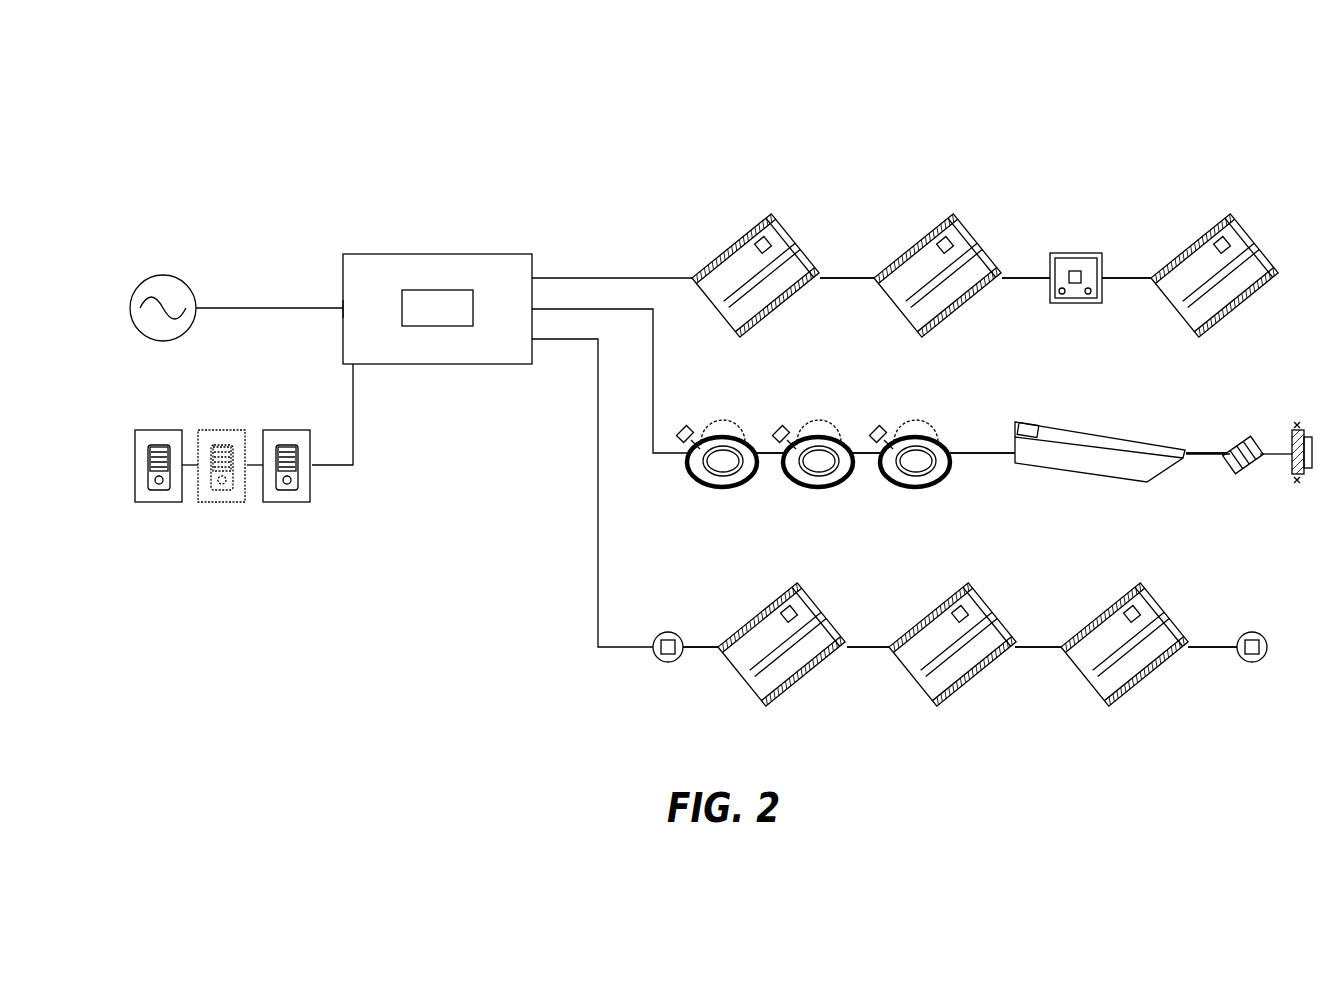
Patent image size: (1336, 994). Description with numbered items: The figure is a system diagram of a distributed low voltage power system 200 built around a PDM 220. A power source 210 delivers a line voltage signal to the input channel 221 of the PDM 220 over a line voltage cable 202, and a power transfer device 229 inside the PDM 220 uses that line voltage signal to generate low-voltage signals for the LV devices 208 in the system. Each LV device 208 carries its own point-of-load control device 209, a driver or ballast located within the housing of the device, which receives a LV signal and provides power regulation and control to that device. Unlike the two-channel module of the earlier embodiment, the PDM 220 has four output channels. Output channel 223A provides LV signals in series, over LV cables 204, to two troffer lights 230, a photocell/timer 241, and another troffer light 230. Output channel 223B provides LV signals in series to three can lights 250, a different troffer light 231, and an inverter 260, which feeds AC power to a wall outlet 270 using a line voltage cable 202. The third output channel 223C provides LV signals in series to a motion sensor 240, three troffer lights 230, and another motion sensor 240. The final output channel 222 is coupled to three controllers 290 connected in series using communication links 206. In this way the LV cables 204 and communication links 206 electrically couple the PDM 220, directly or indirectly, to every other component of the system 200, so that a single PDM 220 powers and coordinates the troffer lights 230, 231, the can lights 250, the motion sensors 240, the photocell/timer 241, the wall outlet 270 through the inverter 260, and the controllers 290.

The distributed low voltage power system 200 is at (190, 152).
The line voltage cable 202 is at (254, 305).
The low-voltage cable 204 is at (253, 462).
The communication link 206 is at (960, 462).
The LV device 208 is at (1332, 118).
The POL control device 209 is at (762, 237).
The power source 210 is at (163, 274).
The PDM 220 is at (370, 250).
The input channel 221 is at (338, 303).
The output channel 222 is at (353, 363).
The output channel 223A is at (550, 272).
The output channel 223B is at (537, 305).
The output channel 223C is at (537, 343).
The power transfer device 229 is at (418, 300).
The troffer light 230 is at (792, 236).
The troffer light 231 is at (1057, 425).
The motion sensor 240 is at (662, 664).
The photocell/timer 241 is at (1078, 295).
The can light 250 is at (710, 432).
The inverter 260 is at (1250, 440).
The wall outlet 270 is at (1295, 482).
The controller 290 is at (162, 503).